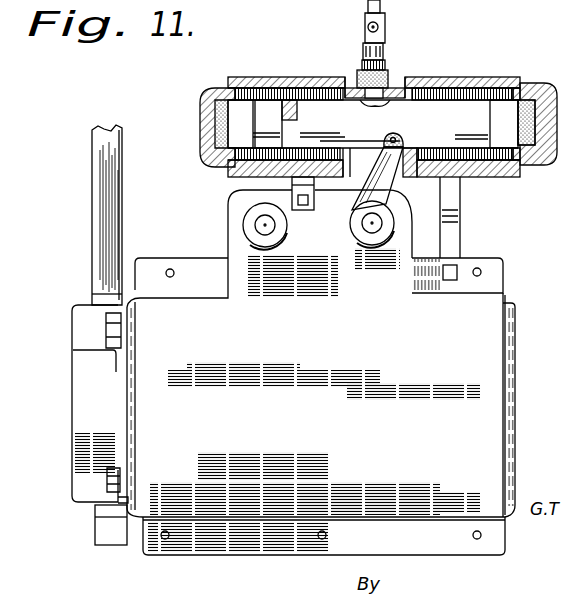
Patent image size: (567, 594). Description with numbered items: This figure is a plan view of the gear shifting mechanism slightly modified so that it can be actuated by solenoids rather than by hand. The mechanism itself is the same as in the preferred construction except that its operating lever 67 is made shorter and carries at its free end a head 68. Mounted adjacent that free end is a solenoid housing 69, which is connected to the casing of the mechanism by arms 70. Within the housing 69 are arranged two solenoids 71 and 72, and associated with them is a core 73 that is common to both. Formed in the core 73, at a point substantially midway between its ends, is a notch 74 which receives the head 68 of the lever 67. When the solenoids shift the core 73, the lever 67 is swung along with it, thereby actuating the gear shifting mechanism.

The operating lever 67 is at (397, 184).
The head 68 is at (401, 135).
The solenoid housing 69 is at (465, 82).
The arms 70 is at (462, 223).
The solenoid 71 is at (298, 92).
The solenoid 72 is at (498, 82).
The core 73 is at (449, 110).
The notch 74 is at (393, 118).